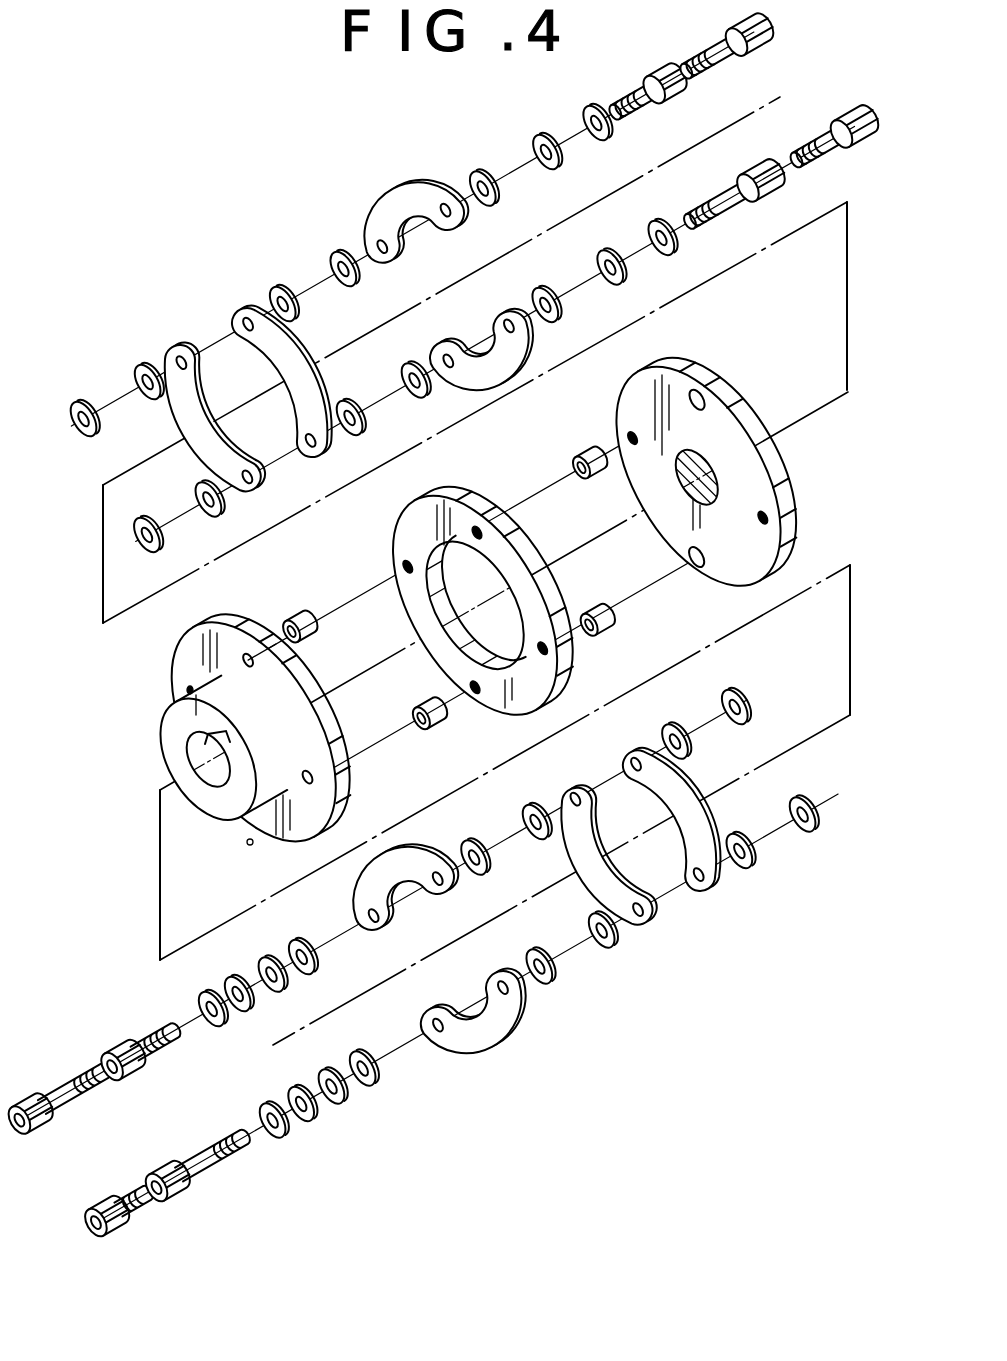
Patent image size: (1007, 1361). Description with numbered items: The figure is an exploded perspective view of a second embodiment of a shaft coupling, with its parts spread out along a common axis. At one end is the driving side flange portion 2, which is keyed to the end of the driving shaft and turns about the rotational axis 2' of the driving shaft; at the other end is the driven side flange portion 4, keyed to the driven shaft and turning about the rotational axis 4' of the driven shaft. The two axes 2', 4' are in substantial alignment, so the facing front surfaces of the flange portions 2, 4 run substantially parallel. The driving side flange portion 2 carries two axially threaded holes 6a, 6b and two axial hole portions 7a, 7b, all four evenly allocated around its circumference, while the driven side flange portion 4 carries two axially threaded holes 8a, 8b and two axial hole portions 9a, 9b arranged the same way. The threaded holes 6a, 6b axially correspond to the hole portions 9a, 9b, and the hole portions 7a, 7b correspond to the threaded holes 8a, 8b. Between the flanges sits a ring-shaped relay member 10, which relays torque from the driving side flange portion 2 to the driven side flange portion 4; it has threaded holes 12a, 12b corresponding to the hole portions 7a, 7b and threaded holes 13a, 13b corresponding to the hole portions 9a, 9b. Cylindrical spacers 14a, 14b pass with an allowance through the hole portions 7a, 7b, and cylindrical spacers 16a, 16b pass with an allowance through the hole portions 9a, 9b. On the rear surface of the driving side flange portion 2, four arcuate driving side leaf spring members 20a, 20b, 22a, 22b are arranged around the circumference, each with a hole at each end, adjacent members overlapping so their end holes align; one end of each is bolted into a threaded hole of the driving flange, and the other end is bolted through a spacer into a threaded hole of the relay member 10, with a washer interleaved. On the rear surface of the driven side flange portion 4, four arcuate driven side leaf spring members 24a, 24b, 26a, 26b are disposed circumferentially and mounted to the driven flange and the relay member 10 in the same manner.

The driving side flange portion 2 is at (248, 735).
The rotational axis of the driving shaft 2' is at (135, 856).
The driven side flange portion 4 is at (706, 462).
The rotational axis of the driven shaft 4' is at (832, 326).
The axially threaded hole 6a is at (252, 654).
The axially threaded hole 6b is at (250, 844).
The axial hole portion 7a is at (318, 782).
The axial hole portion 7b is at (188, 690).
The axially threaded hole 8a is at (770, 517).
The axially threaded hole 8b is at (630, 436).
The axial hole portion 9a is at (708, 390).
The axial hole portion 9b is at (697, 565).
The relay member 10 is at (462, 492).
The threaded hole 12a is at (548, 652).
The threaded hole 12b is at (405, 566).
The threaded hole 13a is at (482, 528).
The threaded hole 13b is at (478, 700).
The cylindrical spacer 14a is at (425, 707).
The cylindrical spacer 14b is at (310, 628).
The cylindrical spacer 16a is at (600, 480).
The cylindrical spacer 16b is at (607, 606).
The driving side leaf spring member 20a is at (716, 892).
The driving side leaf spring member 20b is at (646, 930).
The driving side leaf spring member 22a is at (386, 897).
The driving side leaf spring member 22b is at (508, 1030).
The driven side leaf spring member 24a is at (258, 305).
The driven side leaf spring member 24b is at (212, 358).
The driven side leaf spring member 26a is at (406, 188).
The driven side leaf spring member 26b is at (498, 330).